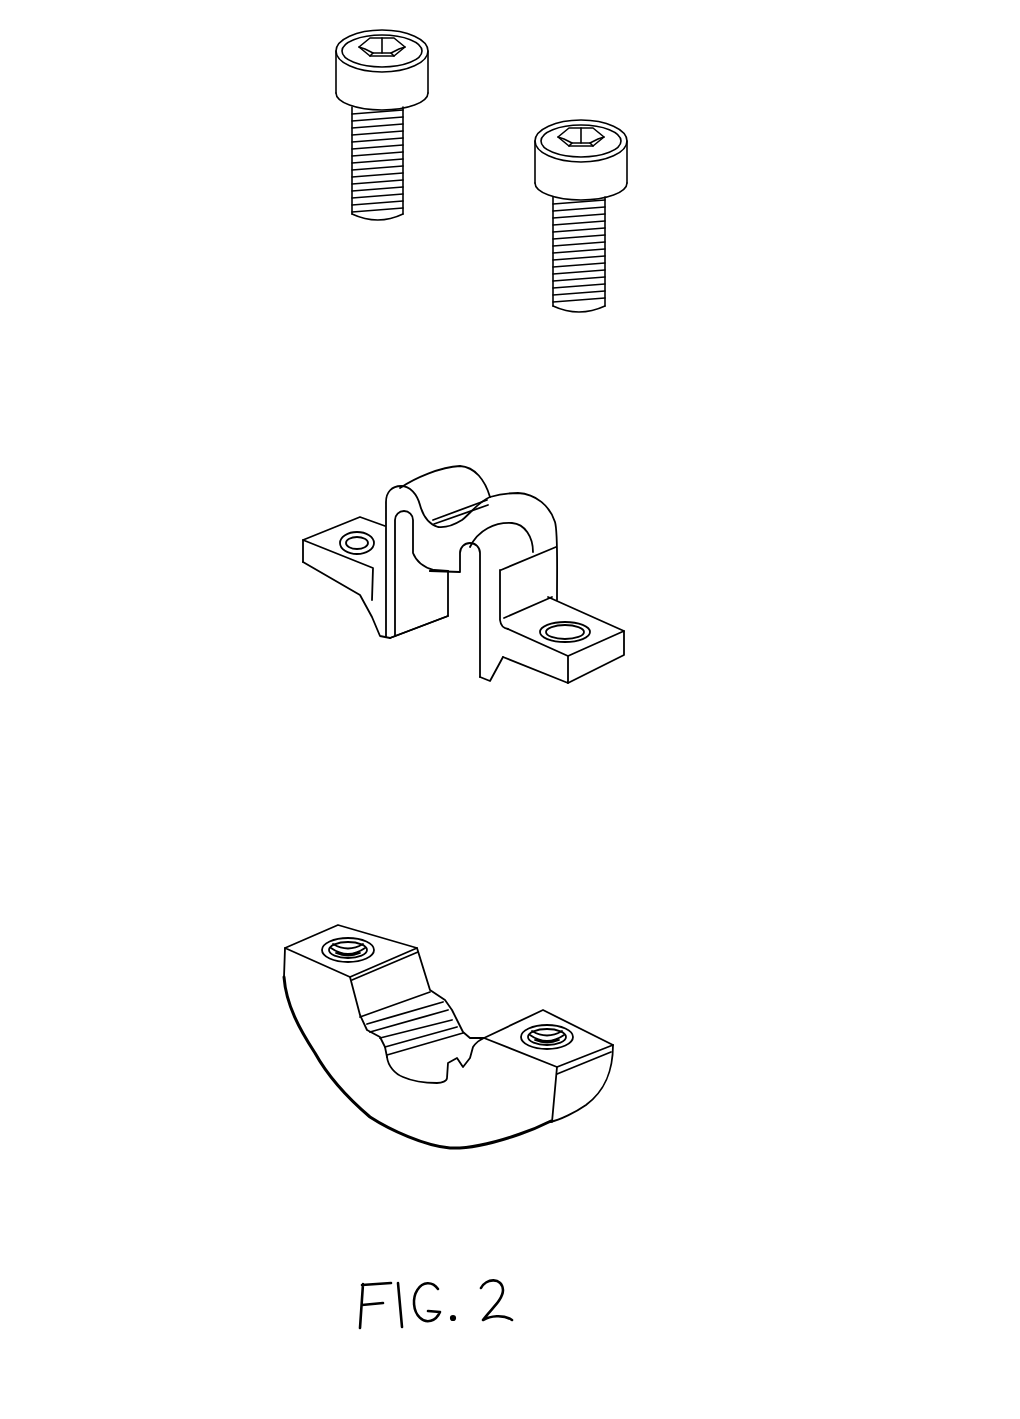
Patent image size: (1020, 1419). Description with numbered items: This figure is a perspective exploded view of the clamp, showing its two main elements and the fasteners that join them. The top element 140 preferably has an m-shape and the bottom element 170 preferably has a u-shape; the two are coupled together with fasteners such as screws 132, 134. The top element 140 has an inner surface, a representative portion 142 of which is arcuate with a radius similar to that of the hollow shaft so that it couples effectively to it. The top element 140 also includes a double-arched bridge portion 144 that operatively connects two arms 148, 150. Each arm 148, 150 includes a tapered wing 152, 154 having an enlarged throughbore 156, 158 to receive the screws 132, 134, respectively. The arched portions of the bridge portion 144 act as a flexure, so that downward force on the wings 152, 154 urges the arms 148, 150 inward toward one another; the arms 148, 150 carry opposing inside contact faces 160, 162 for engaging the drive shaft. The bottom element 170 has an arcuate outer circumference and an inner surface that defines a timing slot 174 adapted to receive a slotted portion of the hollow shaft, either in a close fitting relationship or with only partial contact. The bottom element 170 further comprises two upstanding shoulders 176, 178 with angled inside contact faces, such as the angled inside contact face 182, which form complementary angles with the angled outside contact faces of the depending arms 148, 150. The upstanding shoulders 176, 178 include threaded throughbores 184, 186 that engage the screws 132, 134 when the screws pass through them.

The screw 132 is at (637, 215).
The screw 134 is at (430, 120).
The top element 140 is at (511, 588).
The portion of inner surface 142 is at (426, 566).
The double-arched bridge portion 144 is at (524, 514).
The arm 148 is at (530, 713).
The arm 150 is at (423, 588).
The tapered wing 152 is at (619, 635).
The tapered wing 154 is at (297, 524).
The enlarged throughbore 156 is at (570, 623).
The enlarged throughbore 158 is at (358, 538).
The inside contact face 160 is at (476, 648).
The inside contact face 162 is at (410, 618).
The bottom element 170 is at (415, 986).
The timing slot 174 is at (470, 1022).
The upstanding shoulder 176 is at (599, 1025).
The upstanding shoulder 178 is at (286, 940).
The angled inside contact face 182 is at (413, 975).
The threaded throughbore 184 is at (549, 1020).
The threaded throughbore 186 is at (347, 935).